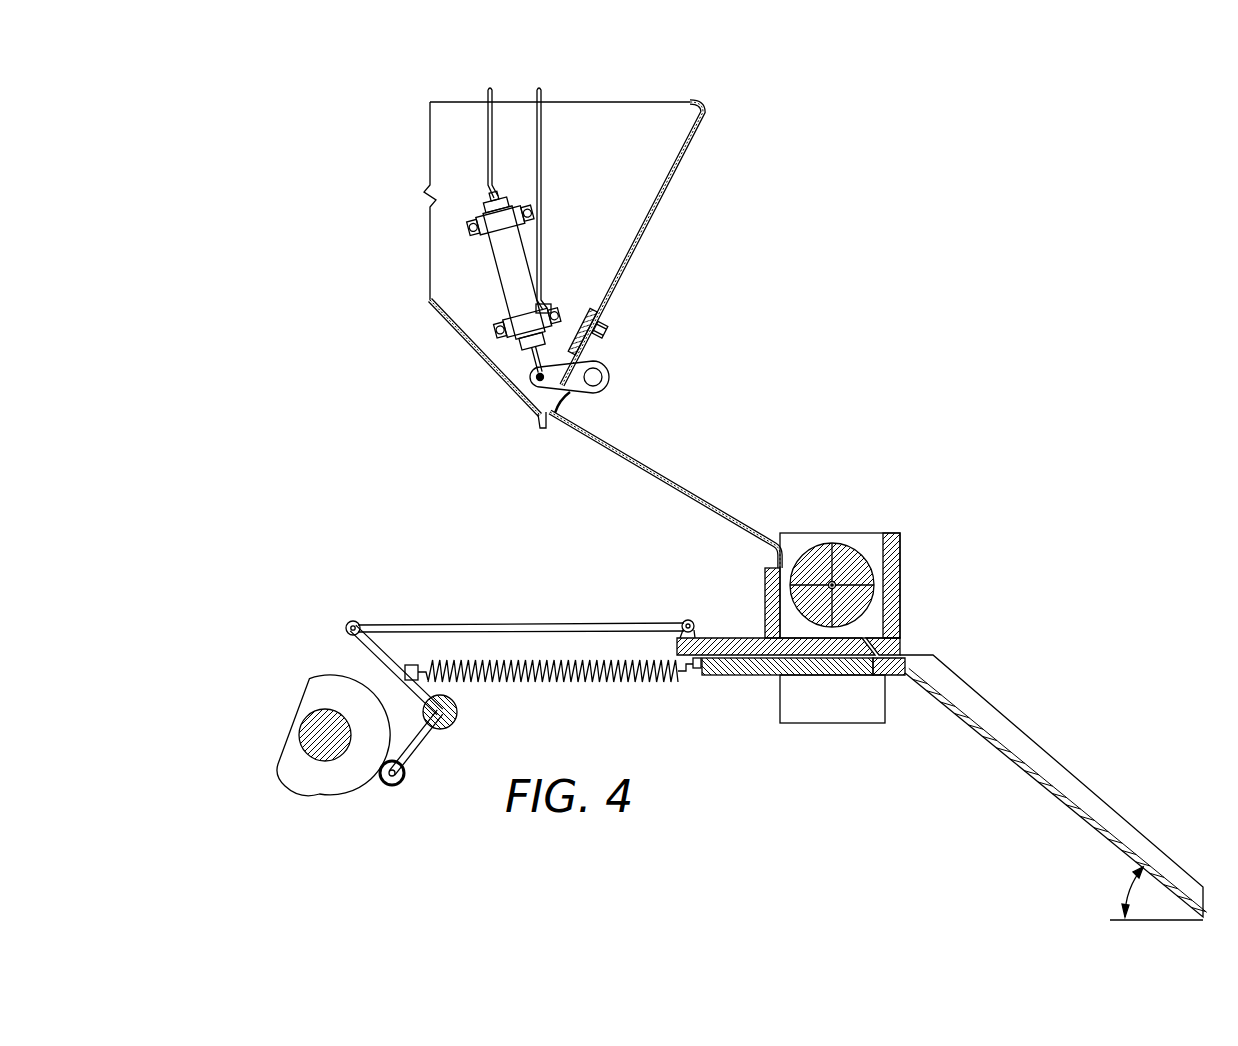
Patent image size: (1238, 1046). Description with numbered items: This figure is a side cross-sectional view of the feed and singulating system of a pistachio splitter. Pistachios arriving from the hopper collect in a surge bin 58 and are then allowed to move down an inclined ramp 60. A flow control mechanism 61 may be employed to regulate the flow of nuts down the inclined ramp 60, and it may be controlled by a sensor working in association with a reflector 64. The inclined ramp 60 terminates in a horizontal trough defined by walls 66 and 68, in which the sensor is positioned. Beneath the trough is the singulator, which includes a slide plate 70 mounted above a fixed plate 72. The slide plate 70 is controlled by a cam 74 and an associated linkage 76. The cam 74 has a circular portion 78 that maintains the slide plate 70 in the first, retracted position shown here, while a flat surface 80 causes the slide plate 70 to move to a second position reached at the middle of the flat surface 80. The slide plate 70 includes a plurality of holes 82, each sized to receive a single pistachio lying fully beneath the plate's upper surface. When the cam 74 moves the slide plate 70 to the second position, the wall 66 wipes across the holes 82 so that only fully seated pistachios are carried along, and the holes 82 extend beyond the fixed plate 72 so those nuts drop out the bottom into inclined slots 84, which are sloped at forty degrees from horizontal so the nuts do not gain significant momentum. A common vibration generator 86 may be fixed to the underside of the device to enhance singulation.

The surge bin 58 is at (608, 101).
The inclined ramp 60 is at (667, 472).
The flow control mechanism 61 is at (608, 372).
The reflector 64 is at (806, 536).
The wall 66 is at (890, 532).
The wall 68 is at (762, 566).
The slide plate 70 is at (724, 637).
The fixed plate 72 is at (740, 677).
The cam 74 is at (318, 793).
The linkage 76 is at (443, 624).
The circular portion 78 is at (320, 672).
The flat surface 80 is at (298, 718).
The holes 82 is at (878, 664).
The inclined slots 84 is at (960, 688).
The vibration generator 86 is at (812, 726).